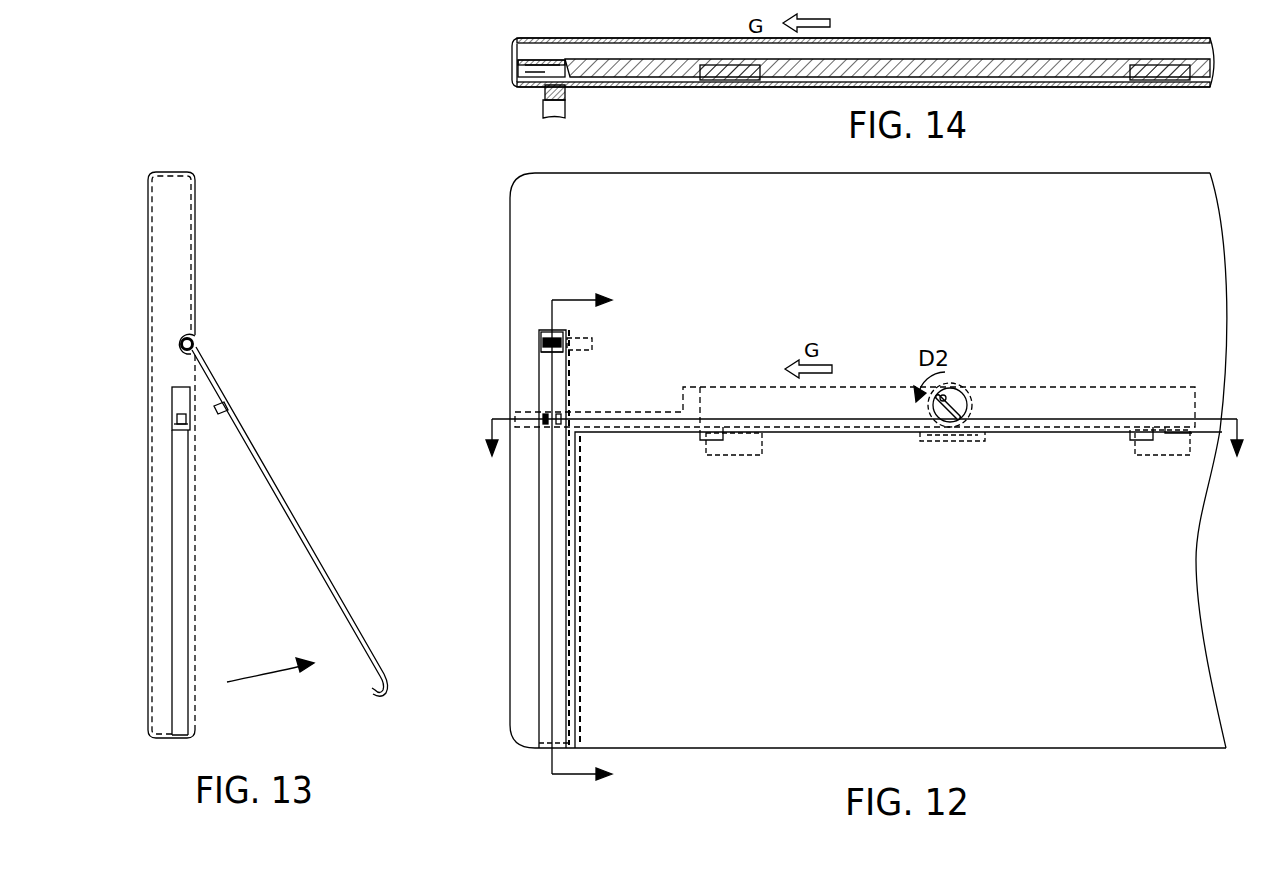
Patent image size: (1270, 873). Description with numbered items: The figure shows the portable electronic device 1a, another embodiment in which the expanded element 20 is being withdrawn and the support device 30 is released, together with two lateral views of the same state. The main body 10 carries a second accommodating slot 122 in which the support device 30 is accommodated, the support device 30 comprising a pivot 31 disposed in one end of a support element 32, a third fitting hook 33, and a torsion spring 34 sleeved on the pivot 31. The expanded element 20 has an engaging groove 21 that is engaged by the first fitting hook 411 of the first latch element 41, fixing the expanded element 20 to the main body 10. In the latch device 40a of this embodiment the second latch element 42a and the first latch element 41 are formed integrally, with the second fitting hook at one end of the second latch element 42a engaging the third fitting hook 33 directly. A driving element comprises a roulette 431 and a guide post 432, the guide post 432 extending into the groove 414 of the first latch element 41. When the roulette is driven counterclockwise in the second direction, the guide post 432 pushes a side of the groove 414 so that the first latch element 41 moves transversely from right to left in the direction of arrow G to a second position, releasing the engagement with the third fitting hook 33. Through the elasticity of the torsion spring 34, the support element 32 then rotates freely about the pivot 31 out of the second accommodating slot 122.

In FIG. 13, the portable electronic device 1a is at (160, 148).
In FIG. 12, the portable electronic device 1a is at (492, 248).
In FIG. 13, the main body 10 is at (180, 254).
In FIG. 12, the main body 10 is at (535, 277).
In FIG. 12, the expanded element 20 is at (1055, 728).
In FIG. 12, the engaging groove 21 is at (703, 445).
In FIG. 13, the support device 30 is at (298, 434).
In FIG. 12, the support device 30 is at (552, 546).
In FIG. 13, the pivot 31 is at (196, 345).
In FIG. 13, the support element 32 is at (288, 495).
In FIG. 13, the third fitting hook 33 is at (220, 414).
In FIG. 14, the third fitting hook 33 is at (545, 97).
In FIG. 13, the torsion spring 34 is at (190, 357).
In FIG. 12, the latch device 40a is at (1148, 386).
In FIG. 14, the first latch element 41 is at (688, 62).
In FIG. 12, the first latch element 41 is at (1075, 402).
In FIG. 13, the second latch element 42a is at (178, 420).
In FIG. 14, the second latch element 42a is at (512, 76).
In FIG. 13, the second accommodating slot 122 is at (180, 635).
In FIG. 12, the first fitting hook 411 is at (736, 447).
In FIG. 12, the groove 414 is at (950, 388).
In FIG. 12, the roulette 431 is at (966, 402).
In FIG. 12, the guide post 432 is at (942, 418).